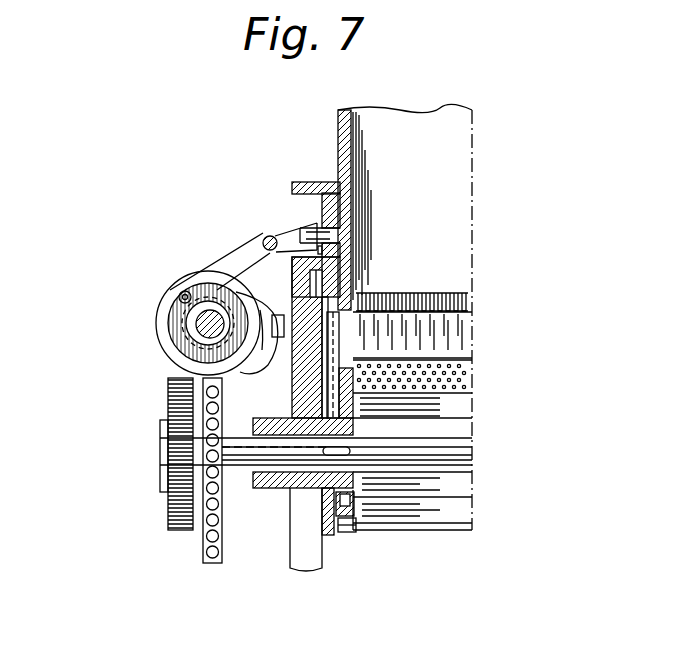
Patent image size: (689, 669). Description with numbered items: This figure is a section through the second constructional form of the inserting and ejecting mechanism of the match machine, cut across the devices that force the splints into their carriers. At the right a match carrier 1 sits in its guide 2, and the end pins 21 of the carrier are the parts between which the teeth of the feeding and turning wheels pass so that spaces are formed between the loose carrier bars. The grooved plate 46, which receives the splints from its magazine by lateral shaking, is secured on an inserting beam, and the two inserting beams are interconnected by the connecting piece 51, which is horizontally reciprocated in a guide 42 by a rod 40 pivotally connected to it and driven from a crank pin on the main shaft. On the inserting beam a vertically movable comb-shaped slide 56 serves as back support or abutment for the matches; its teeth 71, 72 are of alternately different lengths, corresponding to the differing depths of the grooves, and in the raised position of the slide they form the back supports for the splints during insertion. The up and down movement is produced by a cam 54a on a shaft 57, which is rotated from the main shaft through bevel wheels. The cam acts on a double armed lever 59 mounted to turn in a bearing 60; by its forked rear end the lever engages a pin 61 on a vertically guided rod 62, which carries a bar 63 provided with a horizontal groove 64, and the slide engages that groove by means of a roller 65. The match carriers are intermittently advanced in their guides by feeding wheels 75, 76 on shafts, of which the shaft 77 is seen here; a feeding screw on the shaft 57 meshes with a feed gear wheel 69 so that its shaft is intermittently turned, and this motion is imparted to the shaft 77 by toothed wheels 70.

The match carrier 1 is at (470, 386).
The guide 2 is at (330, 535).
The end pin 21 is at (348, 533).
The rod 40 is at (200, 325).
The guide 42 is at (257, 290).
The grooved plate 46 is at (396, 314).
The connecting piece 51 is at (292, 380).
The cam 54a is at (180, 298).
The slide 56 is at (462, 345).
The shaft 57 is at (196, 317).
The double armed lever 59 is at (300, 190).
The bearing 60 is at (300, 229).
The pin 61 is at (336, 233).
The vertically guided rod 62 is at (342, 250).
The bar 63 is at (345, 270).
The horizontal groove 64 is at (345, 306).
The roller 65 is at (350, 290).
The feed gear wheel 69 is at (204, 553).
The toothed wheel 70 is at (168, 400).
The tooth 71 is at (456, 308).
The tooth 72 is at (432, 312).
The feeding wheel 75 is at (322, 507).
The feeding wheel 76 is at (350, 528).
The shaft 77 is at (455, 452).